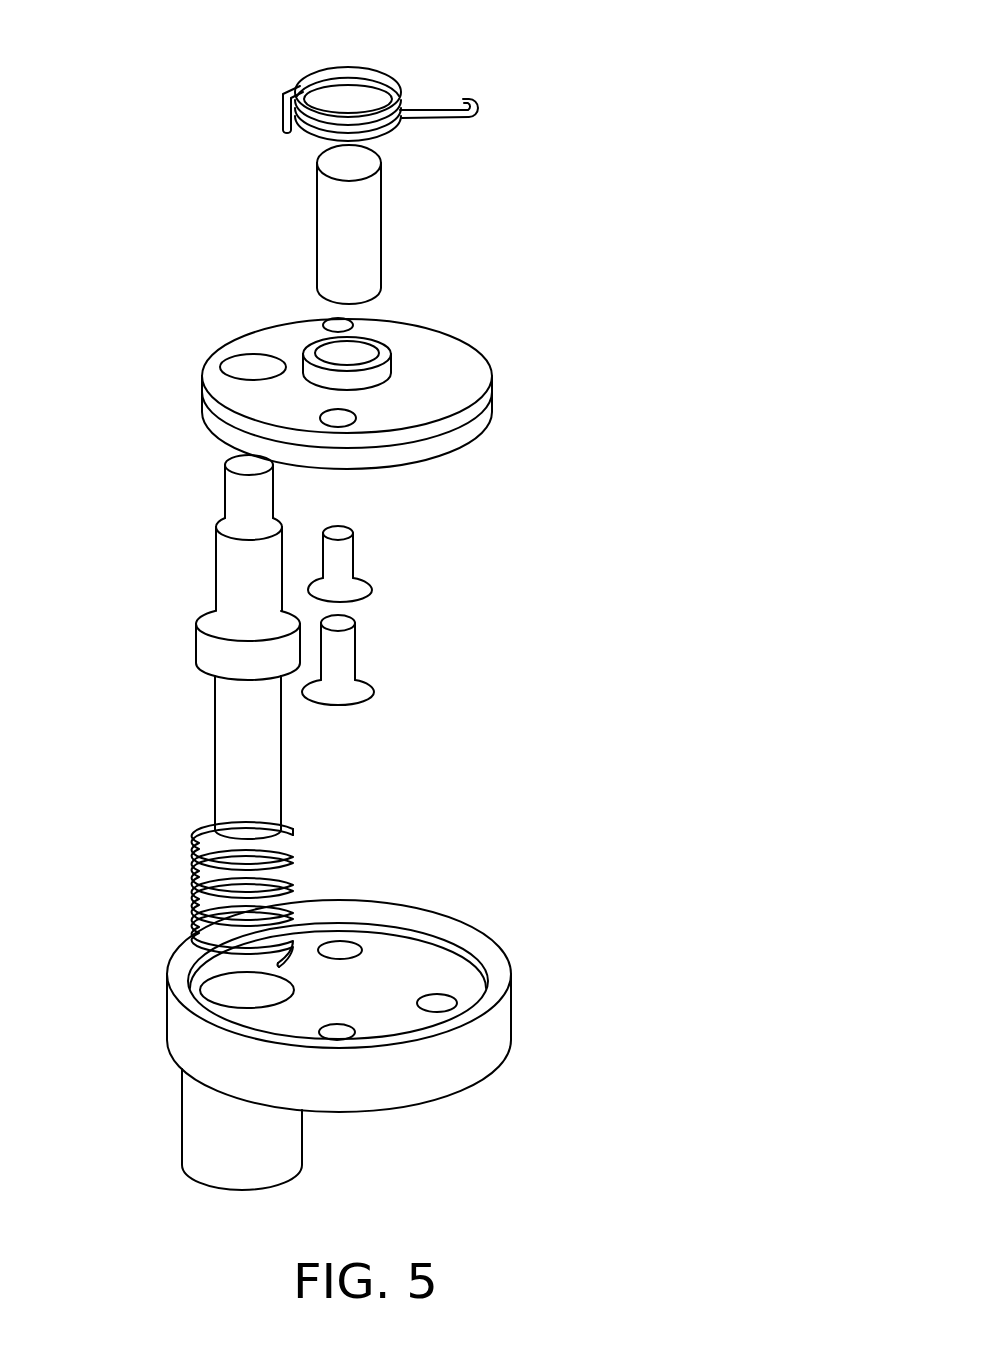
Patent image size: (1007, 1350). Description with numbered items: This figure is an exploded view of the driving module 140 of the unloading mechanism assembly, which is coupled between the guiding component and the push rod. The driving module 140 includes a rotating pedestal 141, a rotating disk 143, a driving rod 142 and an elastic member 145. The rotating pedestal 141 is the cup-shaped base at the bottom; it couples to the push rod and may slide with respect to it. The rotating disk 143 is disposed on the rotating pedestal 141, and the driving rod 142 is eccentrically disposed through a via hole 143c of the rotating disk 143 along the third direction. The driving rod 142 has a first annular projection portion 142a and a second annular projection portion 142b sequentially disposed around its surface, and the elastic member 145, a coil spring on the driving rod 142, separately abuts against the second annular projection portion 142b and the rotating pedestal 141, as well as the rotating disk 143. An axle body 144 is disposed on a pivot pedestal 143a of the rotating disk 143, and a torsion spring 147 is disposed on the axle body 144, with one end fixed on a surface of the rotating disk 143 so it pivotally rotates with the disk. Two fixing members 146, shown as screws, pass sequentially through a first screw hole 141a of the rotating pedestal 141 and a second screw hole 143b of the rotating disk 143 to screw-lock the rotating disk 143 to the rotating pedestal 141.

The driving module 140 is at (566, 63).
The rotating pedestal 141 is at (500, 1037).
The first screw hole 141a is at (346, 950).
The driving rod 142 is at (230, 744).
The first annular projection portion 142a is at (235, 573).
The second annular projection portion 142b is at (210, 651).
The rotating disk 143 is at (486, 415).
The pivot pedestal 143a is at (358, 352).
The second screw hole 143b is at (330, 416).
The via hole 143c is at (243, 371).
The axle body 144 is at (360, 240).
The elastic member 145 is at (205, 870).
The fixing members 146 is at (348, 565).
The torsion spring 147 is at (384, 82).